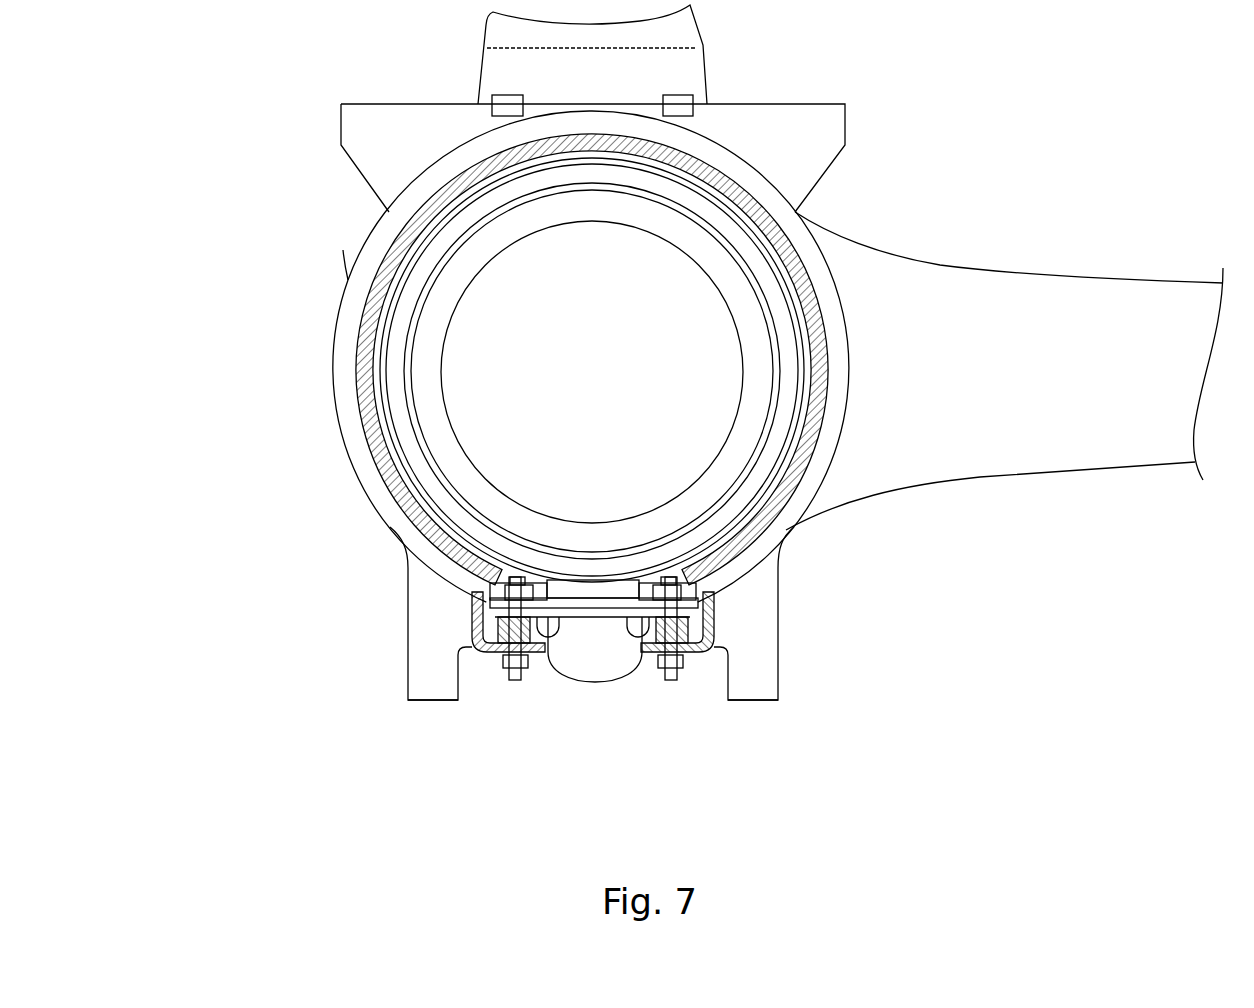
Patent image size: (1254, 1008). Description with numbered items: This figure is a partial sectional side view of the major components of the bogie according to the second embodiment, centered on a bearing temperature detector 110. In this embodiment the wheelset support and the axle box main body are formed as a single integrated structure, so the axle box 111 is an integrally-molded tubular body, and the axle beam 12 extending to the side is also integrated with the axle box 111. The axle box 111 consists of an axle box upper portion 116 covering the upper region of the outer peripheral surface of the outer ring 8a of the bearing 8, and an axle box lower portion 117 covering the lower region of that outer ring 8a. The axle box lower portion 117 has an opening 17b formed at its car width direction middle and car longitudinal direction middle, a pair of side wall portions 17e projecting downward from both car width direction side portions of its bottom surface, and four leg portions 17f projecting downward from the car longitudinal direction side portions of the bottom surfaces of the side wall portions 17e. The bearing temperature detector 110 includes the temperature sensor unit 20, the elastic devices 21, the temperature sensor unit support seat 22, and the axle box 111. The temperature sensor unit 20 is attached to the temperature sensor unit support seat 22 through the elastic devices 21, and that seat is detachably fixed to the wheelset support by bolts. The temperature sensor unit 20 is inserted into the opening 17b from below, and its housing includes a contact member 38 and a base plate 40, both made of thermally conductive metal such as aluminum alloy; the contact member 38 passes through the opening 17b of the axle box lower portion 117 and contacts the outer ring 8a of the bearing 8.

The bearing 8 is at (792, 405).
The outer ring 8a is at (750, 495).
The axle beam 12 is at (1150, 292).
The opening 17b is at (505, 583).
The side wall portions 17e is at (437, 622).
The leg portions 17f is at (408, 702).
The temperature sensor unit 20 is at (603, 683).
The elastic devices 21 is at (475, 622).
The temperature sensor unit support seat 22 is at (495, 628).
The contact member 38 is at (632, 593).
The base plate 40 is at (550, 598).
The bearing temperature detector 110 is at (805, 687).
The axle box 111 is at (170, 316).
The axle box upper portion 116 is at (362, 276).
The axle box lower portion 117 is at (410, 517).